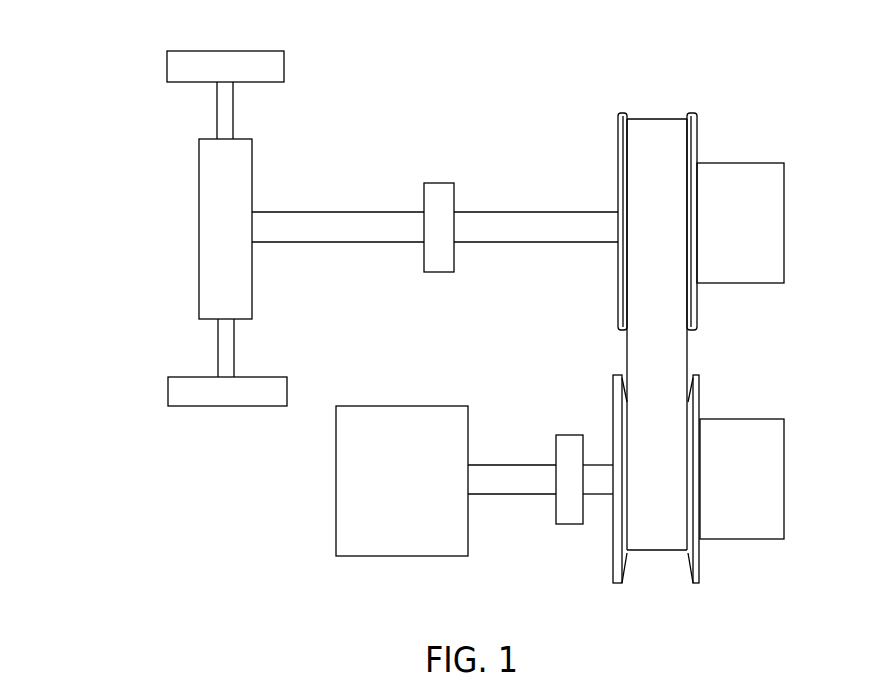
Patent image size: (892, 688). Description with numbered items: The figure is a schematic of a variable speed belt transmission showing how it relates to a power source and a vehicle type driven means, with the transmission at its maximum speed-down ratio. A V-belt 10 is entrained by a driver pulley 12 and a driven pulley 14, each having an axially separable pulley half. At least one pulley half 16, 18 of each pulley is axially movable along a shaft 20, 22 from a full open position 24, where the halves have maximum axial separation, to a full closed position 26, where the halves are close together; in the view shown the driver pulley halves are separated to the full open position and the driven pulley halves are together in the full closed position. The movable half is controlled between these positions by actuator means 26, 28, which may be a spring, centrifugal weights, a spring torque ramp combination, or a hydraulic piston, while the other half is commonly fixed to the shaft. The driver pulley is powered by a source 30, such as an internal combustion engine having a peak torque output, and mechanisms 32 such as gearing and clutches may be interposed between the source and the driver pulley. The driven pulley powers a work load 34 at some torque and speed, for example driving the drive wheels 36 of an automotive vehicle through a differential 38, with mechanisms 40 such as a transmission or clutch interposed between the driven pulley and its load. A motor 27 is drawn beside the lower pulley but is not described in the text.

The V-belt 10 is at (647, 128).
The driver pulley 12 is at (767, 558).
The driven pulley 14 is at (757, 130).
The pulley half 16 is at (690, 112).
The pulley half 18 is at (698, 377).
The shaft 20 is at (602, 497).
The shaft 22 is at (536, 243).
The full open position 24 is at (663, 562).
The full closed position 26 is at (663, 108).
The motor 27 is at (785, 425).
The actuator means 28 is at (784, 205).
The power source 30 is at (345, 498).
The mechanisms 32 is at (556, 435).
The work load 34 is at (135, 307).
The drive wheels 36 is at (284, 53).
The differential 38 is at (198, 163).
The mechanisms 40 is at (441, 242).